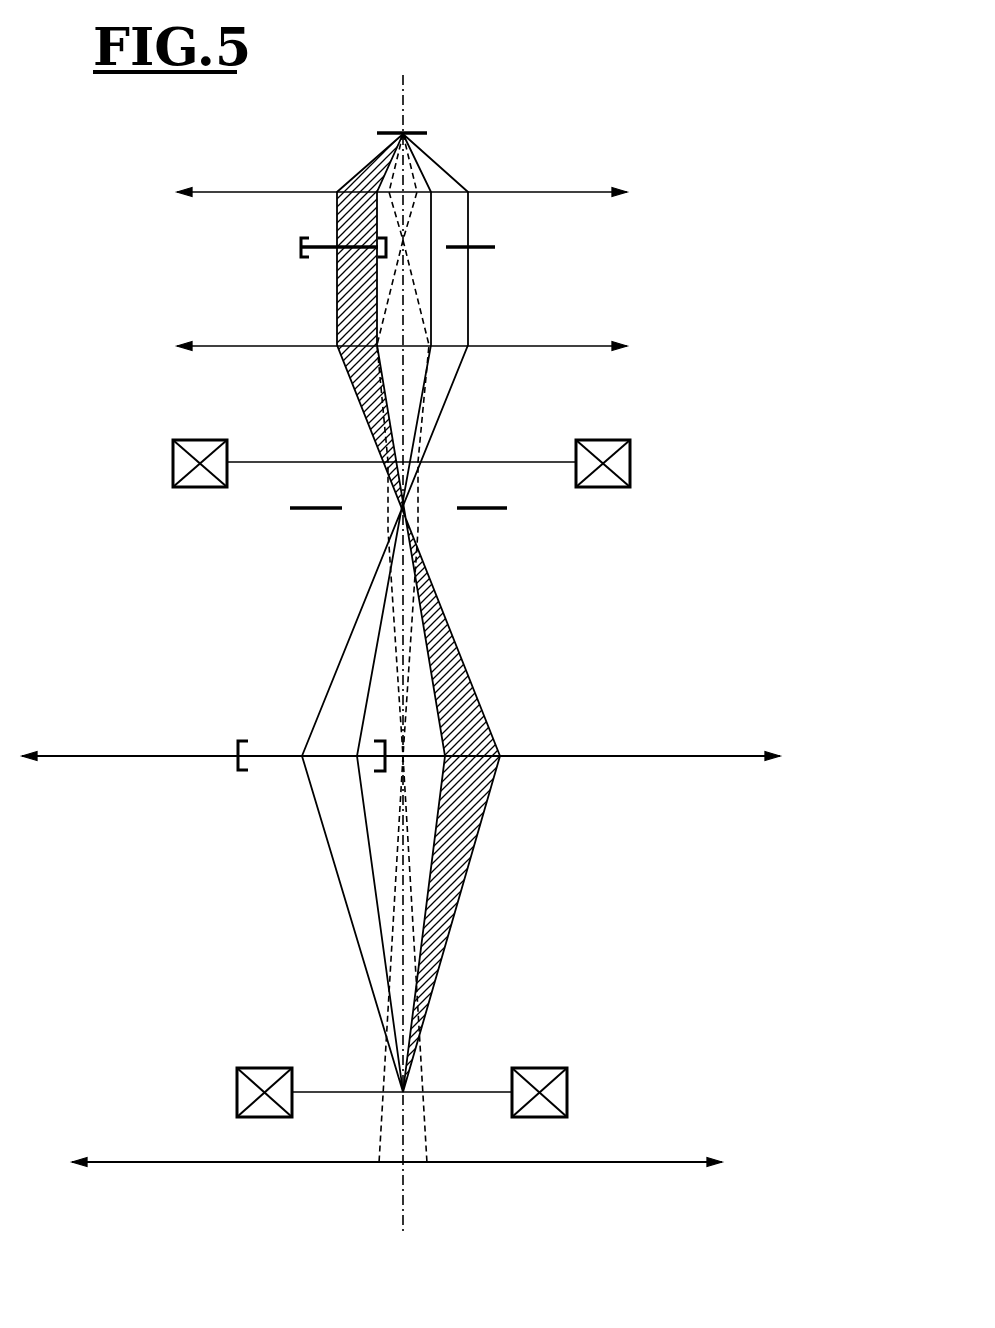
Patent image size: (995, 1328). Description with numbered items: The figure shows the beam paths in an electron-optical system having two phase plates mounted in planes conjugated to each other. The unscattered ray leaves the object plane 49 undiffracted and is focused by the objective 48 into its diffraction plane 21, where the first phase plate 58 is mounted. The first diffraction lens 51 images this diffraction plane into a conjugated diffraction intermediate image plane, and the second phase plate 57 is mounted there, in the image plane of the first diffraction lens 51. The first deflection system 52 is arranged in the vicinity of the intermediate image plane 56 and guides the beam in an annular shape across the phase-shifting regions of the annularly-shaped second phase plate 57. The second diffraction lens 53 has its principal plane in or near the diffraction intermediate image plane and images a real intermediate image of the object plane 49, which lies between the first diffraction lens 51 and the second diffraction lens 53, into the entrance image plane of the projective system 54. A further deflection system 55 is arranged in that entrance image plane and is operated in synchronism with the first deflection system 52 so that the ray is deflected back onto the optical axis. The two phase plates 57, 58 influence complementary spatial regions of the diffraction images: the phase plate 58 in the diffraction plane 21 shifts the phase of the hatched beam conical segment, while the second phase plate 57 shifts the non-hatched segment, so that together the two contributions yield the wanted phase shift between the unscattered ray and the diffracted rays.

The object plane 49 is at (425, 132).
The objective 48 is at (593, 192).
The first phase plate 58 is at (300, 242).
The diffraction plane of the objective lens 21 is at (495, 247).
The first diffraction lens 51 is at (562, 346).
The first deflection system 52 is at (630, 463).
The intermediate image plane 56 is at (500, 509).
The second phase plate 57 is at (237, 750).
The second diffraction lens 53 is at (705, 754).
The further deflection system 55 is at (567, 1092).
The projective system 54 is at (692, 1160).